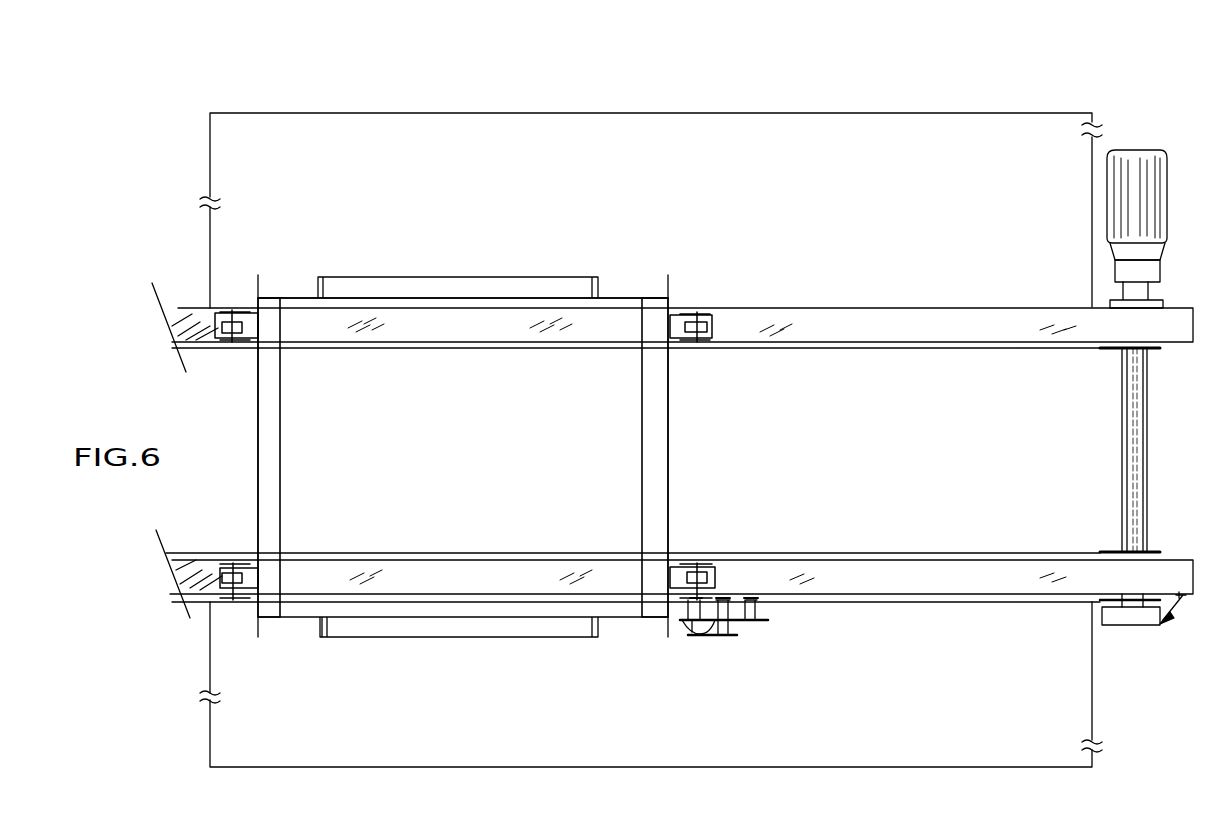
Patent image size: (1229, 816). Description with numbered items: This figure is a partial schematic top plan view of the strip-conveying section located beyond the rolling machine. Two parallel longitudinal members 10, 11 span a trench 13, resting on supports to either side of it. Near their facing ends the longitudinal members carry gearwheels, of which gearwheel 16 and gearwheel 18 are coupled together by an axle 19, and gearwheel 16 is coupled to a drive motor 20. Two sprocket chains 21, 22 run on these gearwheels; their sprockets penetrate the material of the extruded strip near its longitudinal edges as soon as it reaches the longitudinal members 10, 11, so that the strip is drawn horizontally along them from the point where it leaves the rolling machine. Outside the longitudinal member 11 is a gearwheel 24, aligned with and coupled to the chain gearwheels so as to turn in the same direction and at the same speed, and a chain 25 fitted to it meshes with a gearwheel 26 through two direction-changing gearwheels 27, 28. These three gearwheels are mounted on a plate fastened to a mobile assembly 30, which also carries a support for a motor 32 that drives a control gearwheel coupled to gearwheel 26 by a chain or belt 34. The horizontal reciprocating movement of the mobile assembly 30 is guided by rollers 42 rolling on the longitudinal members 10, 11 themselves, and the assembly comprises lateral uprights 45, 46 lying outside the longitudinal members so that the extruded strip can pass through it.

The longitudinal member 10 is at (928, 318).
The longitudinal member 11 is at (948, 584).
The trench 13 is at (634, 148).
The gearwheel 16 is at (1160, 352).
The gearwheel 18 is at (1158, 548).
The axle 19 is at (1135, 456).
The drive motor 20 is at (1145, 205).
The sprocket chain 21 is at (748, 348).
The sprocket chain 22 is at (828, 548).
The gearwheel 24 is at (1097, 606).
The chain 25 is at (878, 602).
The gearwheel 26 is at (747, 592).
The direction-changing gearwheel 27 is at (764, 596).
The direction-changing gearwheel 28 is at (727, 588).
The mobile assembly 30 is at (676, 461).
The motor 32 is at (684, 628).
The chain or belt 34 is at (716, 636).
The roller 42 is at (237, 318).
The lateral upright 45 is at (272, 452).
The lateral upright 46 is at (662, 414).